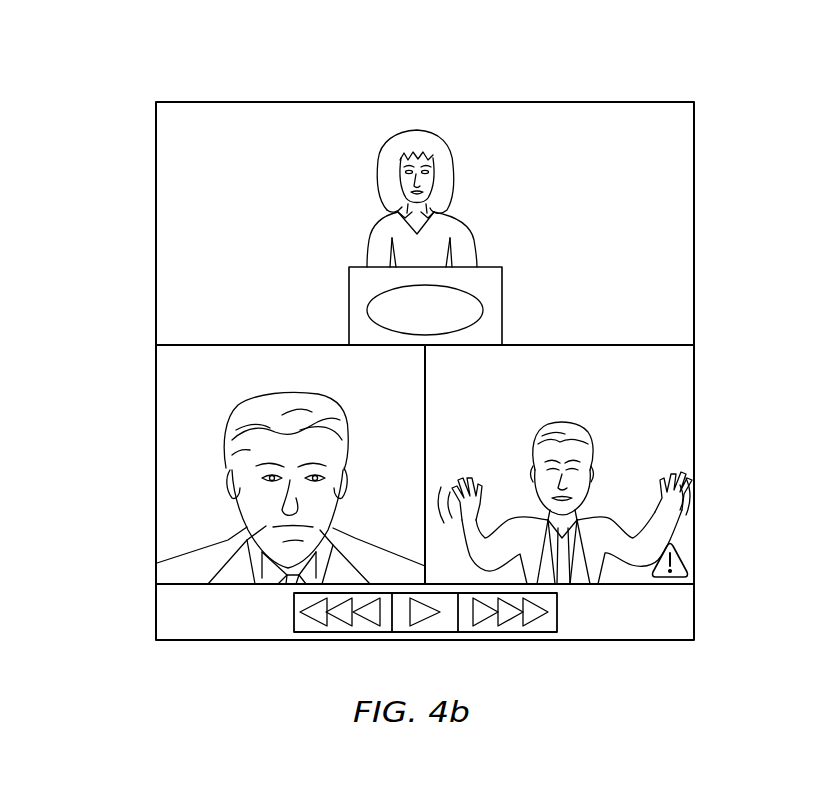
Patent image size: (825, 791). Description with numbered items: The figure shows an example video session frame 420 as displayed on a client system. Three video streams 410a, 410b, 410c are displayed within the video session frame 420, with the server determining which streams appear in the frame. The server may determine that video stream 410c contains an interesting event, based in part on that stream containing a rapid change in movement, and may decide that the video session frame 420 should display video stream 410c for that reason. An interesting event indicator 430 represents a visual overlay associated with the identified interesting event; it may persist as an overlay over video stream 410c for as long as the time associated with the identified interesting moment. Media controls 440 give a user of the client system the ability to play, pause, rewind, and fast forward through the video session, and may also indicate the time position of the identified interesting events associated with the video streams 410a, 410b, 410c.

The video session frame 420 is at (697, 112).
The video stream 410a is at (183, 401).
The video stream 410b is at (188, 215).
The video stream 410c is at (680, 387).
The interesting event indicator 430 is at (680, 552).
The media controls 440 is at (547, 632).